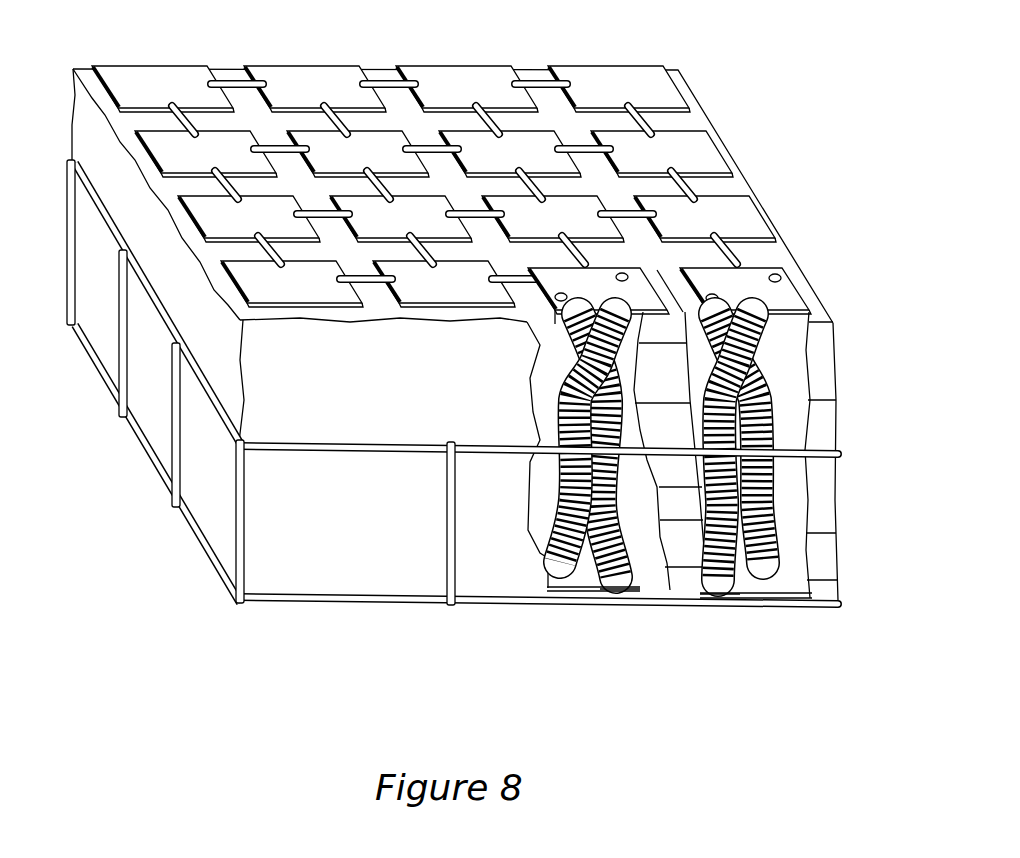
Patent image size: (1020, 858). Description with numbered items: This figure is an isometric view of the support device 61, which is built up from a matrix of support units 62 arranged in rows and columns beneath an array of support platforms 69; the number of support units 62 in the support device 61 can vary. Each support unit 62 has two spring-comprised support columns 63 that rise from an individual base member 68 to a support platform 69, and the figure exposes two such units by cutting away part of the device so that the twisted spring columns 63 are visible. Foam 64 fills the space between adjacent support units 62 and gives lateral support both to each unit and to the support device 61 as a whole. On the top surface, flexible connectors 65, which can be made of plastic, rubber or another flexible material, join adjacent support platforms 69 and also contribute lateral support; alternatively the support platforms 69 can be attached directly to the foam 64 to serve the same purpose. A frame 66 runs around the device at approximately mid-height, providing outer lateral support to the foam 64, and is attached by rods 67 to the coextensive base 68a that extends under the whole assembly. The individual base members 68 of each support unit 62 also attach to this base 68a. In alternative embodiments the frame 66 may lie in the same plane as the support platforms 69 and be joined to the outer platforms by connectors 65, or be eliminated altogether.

The support device 61 is at (758, 103).
The support unit 62 is at (552, 463).
The spring-comprised support column 63 is at (558, 400).
The foam 64 is at (665, 403).
The flexible connector 65 is at (538, 84).
The frame 66 is at (112, 232).
The rod 67 is at (122, 350).
The base member 68 is at (553, 573).
The coextensive base 68a is at (738, 592).
The support platform 69 is at (602, 290).